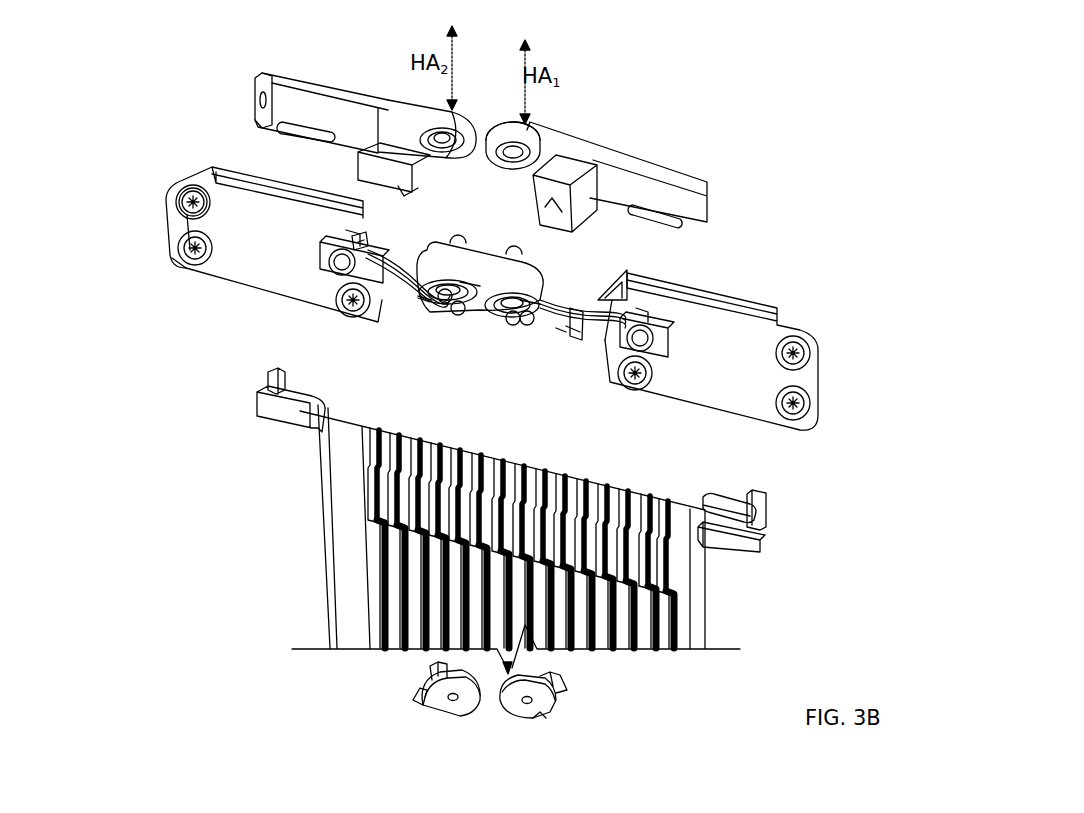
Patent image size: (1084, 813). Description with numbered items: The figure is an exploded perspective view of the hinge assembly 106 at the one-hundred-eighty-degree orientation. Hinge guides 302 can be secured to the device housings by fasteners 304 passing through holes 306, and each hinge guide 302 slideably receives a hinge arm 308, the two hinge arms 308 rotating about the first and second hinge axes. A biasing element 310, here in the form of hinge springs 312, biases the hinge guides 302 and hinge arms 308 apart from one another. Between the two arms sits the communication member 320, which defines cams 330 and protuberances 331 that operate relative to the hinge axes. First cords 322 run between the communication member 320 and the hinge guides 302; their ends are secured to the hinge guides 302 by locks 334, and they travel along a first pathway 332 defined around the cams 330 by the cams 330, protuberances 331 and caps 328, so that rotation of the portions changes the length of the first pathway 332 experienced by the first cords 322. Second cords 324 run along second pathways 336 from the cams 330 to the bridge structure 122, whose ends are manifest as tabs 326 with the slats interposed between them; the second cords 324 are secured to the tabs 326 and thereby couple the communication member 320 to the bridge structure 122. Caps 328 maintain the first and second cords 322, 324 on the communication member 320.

The hinge assembly 106 is at (727, 83).
The communication member 320 is at (483, 252).
The hinge arm 308 is at (660, 172).
The hinge spring 312 is at (715, 270).
The fastener 304 is at (180, 199).
The hole 306 is at (180, 210).
The hinge guide 302 is at (830, 294).
The biasing element 310 is at (348, 232).
The lock 334 is at (336, 250).
The first cord 322 is at (572, 325).
The first pathway 332 is at (529, 297).
The second cord 324 is at (404, 292).
The cam 330 is at (456, 310).
The protuberance 331 is at (515, 324).
The second pathway 336 is at (427, 296).
The tab 326 is at (258, 403).
The bridge structure 122 is at (705, 622).
The cap 328 is at (420, 695).